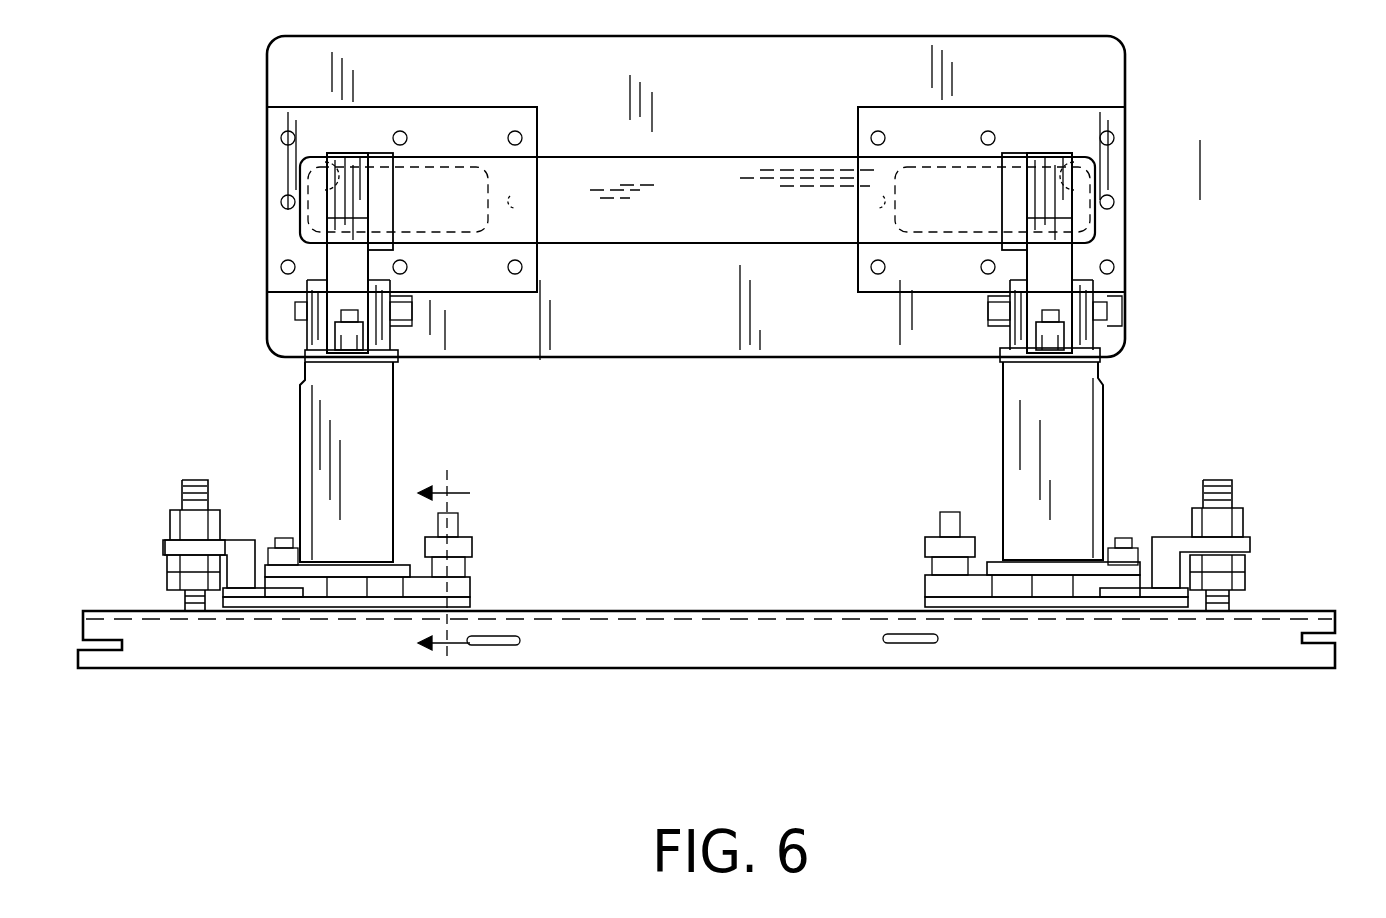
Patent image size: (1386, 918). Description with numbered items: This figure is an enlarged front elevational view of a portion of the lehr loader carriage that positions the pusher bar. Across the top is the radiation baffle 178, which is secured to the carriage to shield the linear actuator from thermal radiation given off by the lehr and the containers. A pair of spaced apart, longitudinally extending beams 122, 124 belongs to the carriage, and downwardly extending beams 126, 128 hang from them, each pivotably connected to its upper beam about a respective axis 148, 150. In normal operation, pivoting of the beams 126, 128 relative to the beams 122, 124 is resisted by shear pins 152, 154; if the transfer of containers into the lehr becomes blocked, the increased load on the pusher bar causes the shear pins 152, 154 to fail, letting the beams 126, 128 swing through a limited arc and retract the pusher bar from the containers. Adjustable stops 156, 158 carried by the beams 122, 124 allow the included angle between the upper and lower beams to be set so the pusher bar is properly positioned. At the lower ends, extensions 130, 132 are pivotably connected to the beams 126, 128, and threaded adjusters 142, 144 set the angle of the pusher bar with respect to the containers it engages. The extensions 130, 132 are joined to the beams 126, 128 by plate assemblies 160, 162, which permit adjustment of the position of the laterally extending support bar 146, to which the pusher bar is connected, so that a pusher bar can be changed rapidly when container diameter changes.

The radiation baffle 178 is at (1112, 54).
The longitudinally extending beam 122 is at (320, 190).
The longitudinally extending beam 124 is at (1060, 187).
The downwardly extending beam 126 is at (345, 433).
The downwardly extending beam 128 is at (1103, 420).
The extension 130 is at (242, 540).
The extension 132 is at (1165, 540).
The threaded adjuster 142 is at (170, 518).
The threaded adjuster 144 is at (1240, 520).
The support bar 146 is at (762, 652).
The axis 148 is at (296, 307).
The axis 150 is at (1115, 302).
The shear pin 152 is at (302, 283).
The shear pin 154 is at (992, 286).
The adjustable stop 156 is at (340, 332).
The adjustable stop 158 is at (1115, 330).
The plate assembly 160 is at (465, 585).
The plate assembly 162 is at (950, 580).